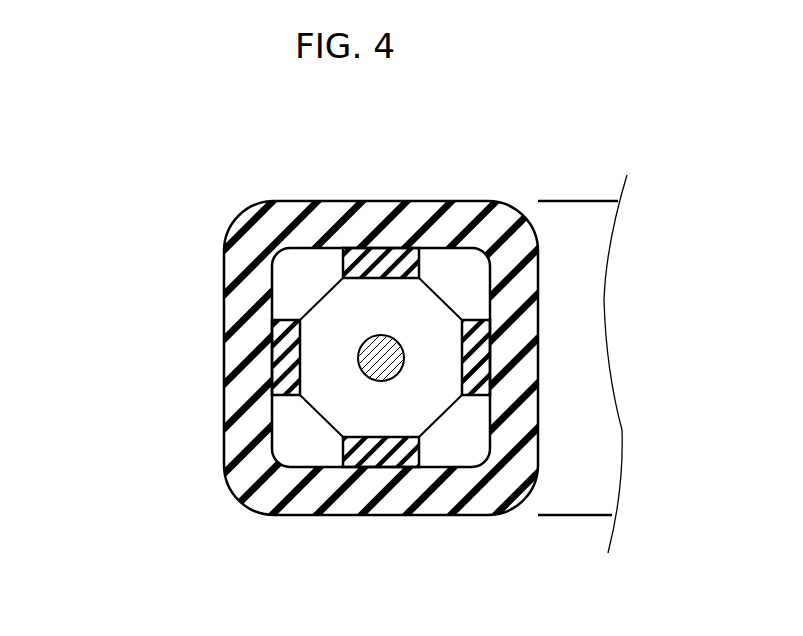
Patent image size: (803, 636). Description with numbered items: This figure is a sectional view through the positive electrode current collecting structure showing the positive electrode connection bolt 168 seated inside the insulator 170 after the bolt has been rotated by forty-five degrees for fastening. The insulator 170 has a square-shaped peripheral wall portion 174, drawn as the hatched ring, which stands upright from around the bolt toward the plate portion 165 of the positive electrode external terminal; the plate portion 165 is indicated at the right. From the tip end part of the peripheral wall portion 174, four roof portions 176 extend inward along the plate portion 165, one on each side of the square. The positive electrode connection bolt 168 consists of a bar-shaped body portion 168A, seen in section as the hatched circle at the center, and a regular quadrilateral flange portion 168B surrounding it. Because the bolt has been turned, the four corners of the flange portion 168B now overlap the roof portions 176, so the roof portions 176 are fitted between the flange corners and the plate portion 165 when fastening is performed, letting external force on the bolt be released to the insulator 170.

The plate portion 165 is at (563, 199).
The positive electrode connection bolt 168 is at (337, 362).
The bar-shaped body portion 168A is at (372, 362).
The flange portion 168B is at (338, 397).
The insulator 170 is at (401, 375).
The peripheral wall portion 174 is at (257, 237).
The roof portion 176 is at (360, 258).